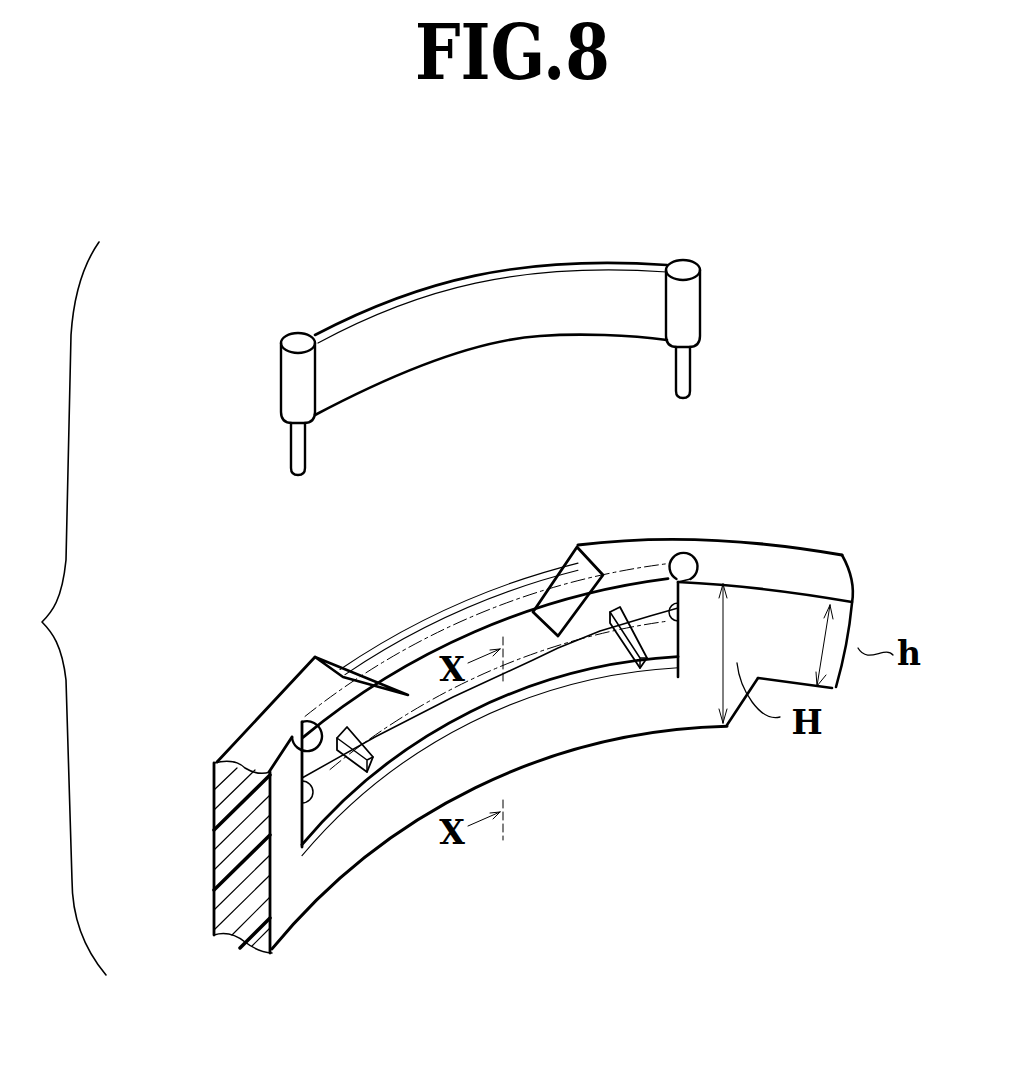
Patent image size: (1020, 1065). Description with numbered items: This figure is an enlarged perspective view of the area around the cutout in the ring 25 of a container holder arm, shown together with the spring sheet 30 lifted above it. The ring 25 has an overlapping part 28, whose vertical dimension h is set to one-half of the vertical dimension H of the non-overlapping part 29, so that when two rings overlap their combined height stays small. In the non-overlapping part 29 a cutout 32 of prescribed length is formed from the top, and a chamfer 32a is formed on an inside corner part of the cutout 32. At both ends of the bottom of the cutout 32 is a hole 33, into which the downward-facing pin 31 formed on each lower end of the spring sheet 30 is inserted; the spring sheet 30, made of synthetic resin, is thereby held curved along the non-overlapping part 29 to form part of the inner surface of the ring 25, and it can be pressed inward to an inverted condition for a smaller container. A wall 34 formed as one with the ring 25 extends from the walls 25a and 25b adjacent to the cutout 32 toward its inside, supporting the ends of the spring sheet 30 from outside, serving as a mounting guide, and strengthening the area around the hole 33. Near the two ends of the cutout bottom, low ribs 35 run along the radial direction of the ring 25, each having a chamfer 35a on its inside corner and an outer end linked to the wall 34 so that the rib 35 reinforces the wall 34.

The ring 25 is at (186, 840).
The wall 25a is at (255, 740).
The wall 25b is at (688, 552).
The overlapping part 28 is at (783, 605).
The non-overlapping part 29 is at (293, 897).
The spring sheet 30 is at (485, 295).
The pin 31 is at (293, 450).
The cutout 32 is at (527, 660).
The chamfer 32a is at (547, 700).
The hole 33 is at (672, 608).
The wall 34 is at (318, 652).
The rib 35 is at (607, 645).
The chamfer 35a is at (657, 637).